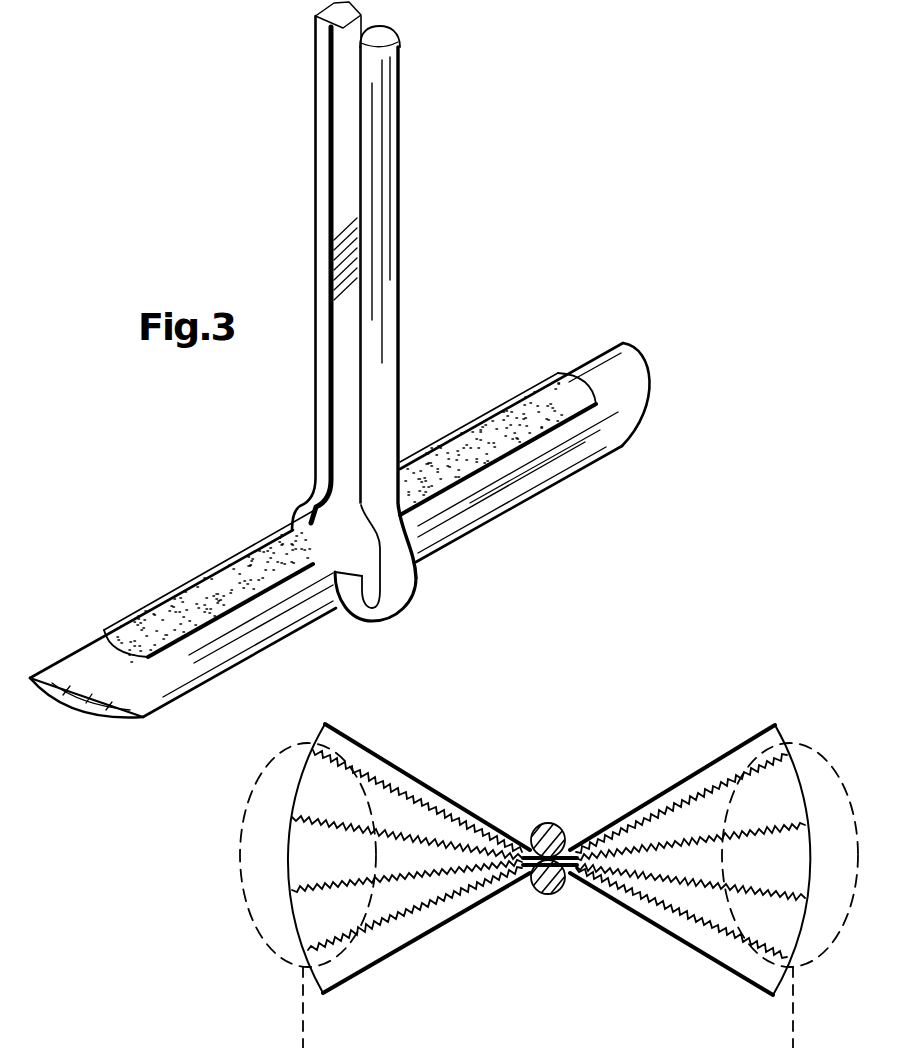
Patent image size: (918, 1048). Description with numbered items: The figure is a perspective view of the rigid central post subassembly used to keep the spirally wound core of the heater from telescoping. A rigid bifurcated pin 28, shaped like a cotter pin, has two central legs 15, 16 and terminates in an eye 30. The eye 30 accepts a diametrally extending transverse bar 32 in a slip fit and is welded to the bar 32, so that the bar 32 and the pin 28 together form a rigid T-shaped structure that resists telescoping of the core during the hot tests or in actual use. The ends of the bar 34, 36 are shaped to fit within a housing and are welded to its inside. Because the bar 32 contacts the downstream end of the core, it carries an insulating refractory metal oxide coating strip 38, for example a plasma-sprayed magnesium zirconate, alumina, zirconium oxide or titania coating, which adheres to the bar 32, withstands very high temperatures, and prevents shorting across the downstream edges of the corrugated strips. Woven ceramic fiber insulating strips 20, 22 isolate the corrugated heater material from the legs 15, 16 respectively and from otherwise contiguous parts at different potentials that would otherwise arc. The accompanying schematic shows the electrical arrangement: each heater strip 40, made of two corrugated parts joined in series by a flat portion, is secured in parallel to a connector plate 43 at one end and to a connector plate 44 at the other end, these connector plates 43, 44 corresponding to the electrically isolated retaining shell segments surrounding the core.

The leg 15 is at (390, 97).
The leg 16 is at (327, 73).
The woven ceramic fiber insulating strip 20 is at (705, 955).
The woven ceramic fiber insulating strip 22 is at (638, 803).
The rigid bifurcated pin 28 is at (400, 479).
The eye 30 is at (338, 574).
The bar 32 is at (500, 493).
The end of the bar 34 is at (72, 695).
The end of the bar 36 is at (647, 407).
The refractory metal oxide coating strip 38 is at (522, 413).
The heater strip 40 is at (420, 907).
The connector plate 43 is at (803, 807).
The connector plate 44 is at (288, 855).